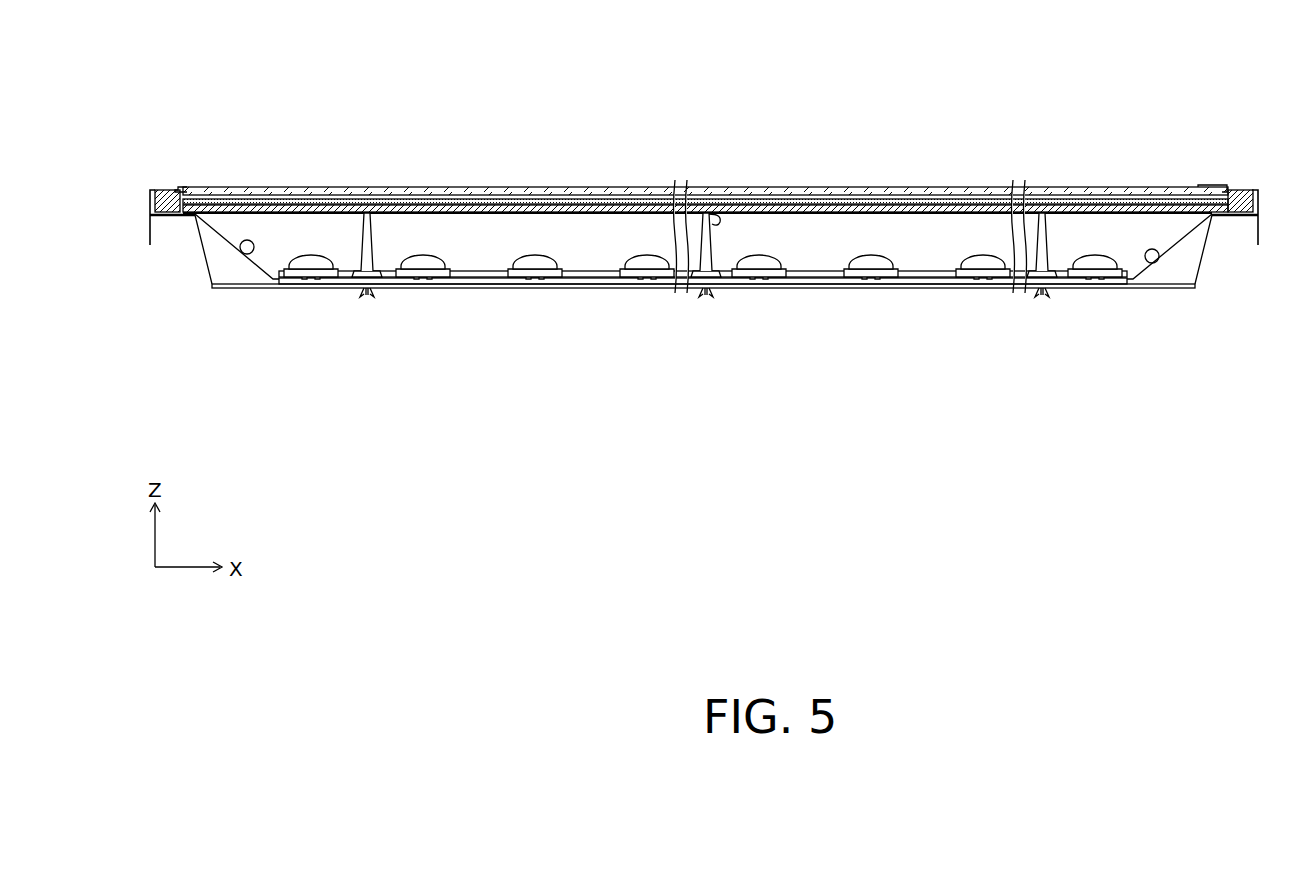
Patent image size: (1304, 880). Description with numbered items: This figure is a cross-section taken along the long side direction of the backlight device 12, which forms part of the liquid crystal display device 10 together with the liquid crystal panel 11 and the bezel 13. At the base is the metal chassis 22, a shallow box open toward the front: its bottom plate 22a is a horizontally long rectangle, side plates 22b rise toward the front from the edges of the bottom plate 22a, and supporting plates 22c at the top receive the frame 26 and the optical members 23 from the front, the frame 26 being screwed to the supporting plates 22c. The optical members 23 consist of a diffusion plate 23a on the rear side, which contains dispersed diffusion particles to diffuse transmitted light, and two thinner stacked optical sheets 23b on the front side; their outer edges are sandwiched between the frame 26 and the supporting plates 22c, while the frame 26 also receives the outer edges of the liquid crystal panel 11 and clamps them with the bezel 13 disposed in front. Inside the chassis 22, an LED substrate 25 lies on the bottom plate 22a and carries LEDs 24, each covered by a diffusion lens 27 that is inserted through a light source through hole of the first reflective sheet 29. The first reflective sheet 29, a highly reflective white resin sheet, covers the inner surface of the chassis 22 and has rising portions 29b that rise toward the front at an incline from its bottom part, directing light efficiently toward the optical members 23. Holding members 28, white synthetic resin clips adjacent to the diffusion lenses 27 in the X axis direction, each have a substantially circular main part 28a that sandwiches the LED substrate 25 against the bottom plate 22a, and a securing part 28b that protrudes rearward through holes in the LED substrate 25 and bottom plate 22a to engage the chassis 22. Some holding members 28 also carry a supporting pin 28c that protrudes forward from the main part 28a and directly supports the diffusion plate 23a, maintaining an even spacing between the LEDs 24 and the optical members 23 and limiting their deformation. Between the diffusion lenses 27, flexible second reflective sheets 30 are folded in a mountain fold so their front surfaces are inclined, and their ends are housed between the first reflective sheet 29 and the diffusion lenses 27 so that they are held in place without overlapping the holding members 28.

The liquid crystal display device 10 is at (763, 90).
The liquid crystal panel 11 is at (301, 188).
The backlight device 12 is at (640, 360).
The bezel 13 is at (185, 187).
The chassis 22 is at (705, 285).
The bottom plate 22a is at (272, 288).
The side plate 22b is at (203, 250).
The supporting plate 22c is at (153, 228).
The optical members 23 is at (602, 128).
The diffusion plate 23a is at (560, 210).
The optical sheets 23b is at (508, 201).
The LED 24 is at (511, 277).
The LED substrate 25 is at (776, 288).
The frame 26 is at (165, 198).
The diffusion lens 27 is at (305, 256).
The holding member 28 is at (367, 271).
The main part 28a is at (377, 258).
The securing part 28b is at (363, 298).
The supporting pin 28c is at (716, 216).
The first reflective sheet 29 is at (225, 238).
The rising portion 29b is at (248, 255).
The second reflective sheet 30 is at (598, 271).